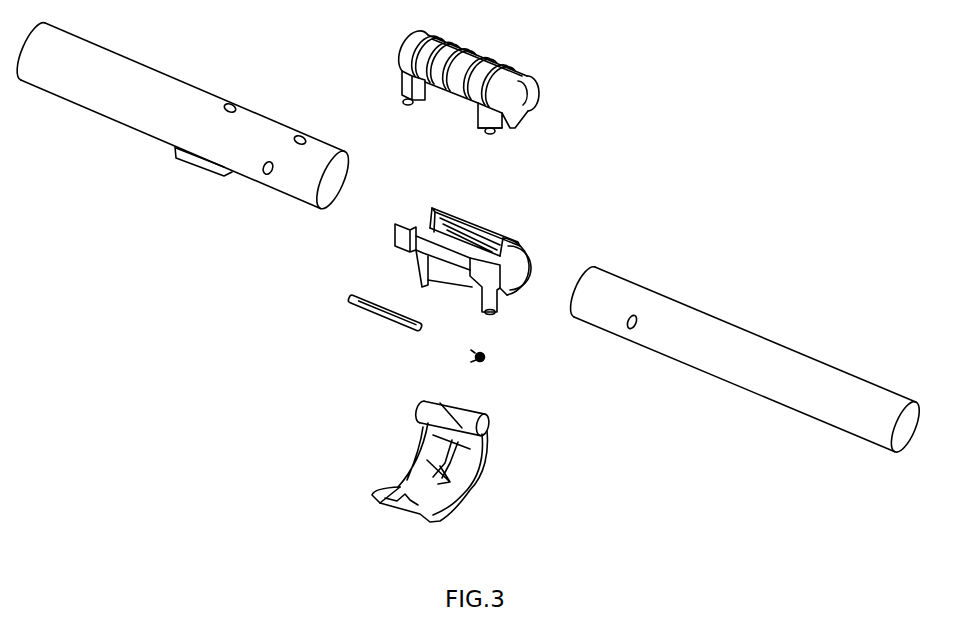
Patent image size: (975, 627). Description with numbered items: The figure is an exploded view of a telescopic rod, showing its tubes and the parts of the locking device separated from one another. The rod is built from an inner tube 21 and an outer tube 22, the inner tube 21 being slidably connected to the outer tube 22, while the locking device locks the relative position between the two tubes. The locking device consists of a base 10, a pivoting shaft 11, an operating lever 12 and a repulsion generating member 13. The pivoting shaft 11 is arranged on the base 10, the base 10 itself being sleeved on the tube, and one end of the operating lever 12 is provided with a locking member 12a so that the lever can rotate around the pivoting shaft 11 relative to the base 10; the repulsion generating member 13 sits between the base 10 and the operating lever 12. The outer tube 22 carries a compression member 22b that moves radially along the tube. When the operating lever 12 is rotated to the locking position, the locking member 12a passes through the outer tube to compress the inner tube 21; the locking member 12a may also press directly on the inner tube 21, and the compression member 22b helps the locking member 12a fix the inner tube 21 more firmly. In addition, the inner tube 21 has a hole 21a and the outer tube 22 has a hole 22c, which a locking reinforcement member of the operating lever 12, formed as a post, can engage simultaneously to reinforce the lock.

The base 10 is at (537, 258).
The pivoting shaft 11 is at (373, 303).
The operating lever 12 is at (397, 476).
The locking member 12a is at (430, 395).
The repulsion generating member 13 is at (486, 356).
The inner tube 21 is at (710, 322).
The hole 21a is at (636, 315).
The outer tube 22 is at (88, 52).
The compression member 22b is at (180, 162).
The hole 22c is at (268, 177).